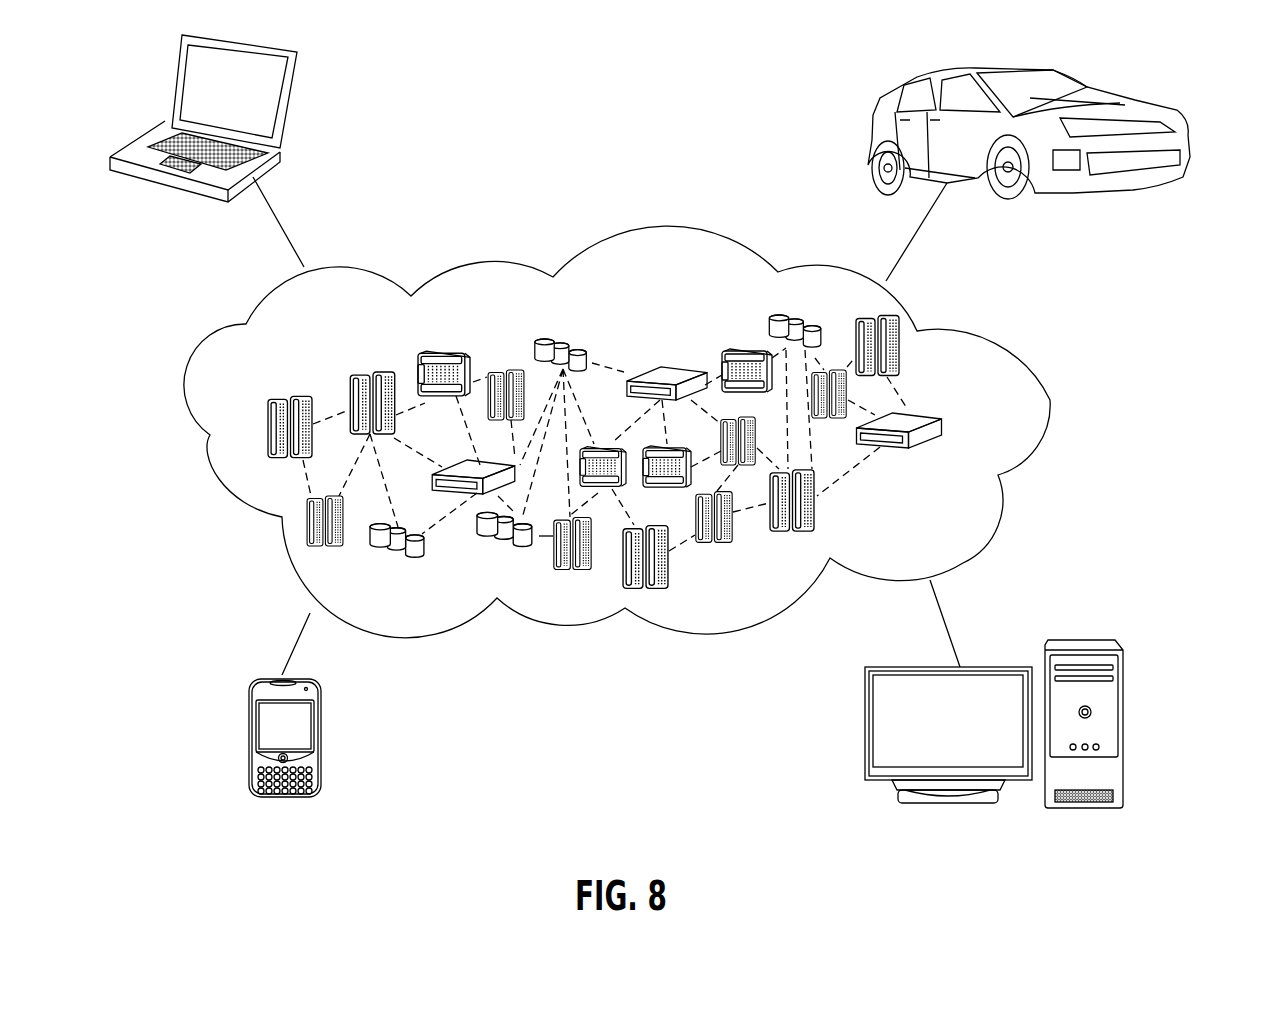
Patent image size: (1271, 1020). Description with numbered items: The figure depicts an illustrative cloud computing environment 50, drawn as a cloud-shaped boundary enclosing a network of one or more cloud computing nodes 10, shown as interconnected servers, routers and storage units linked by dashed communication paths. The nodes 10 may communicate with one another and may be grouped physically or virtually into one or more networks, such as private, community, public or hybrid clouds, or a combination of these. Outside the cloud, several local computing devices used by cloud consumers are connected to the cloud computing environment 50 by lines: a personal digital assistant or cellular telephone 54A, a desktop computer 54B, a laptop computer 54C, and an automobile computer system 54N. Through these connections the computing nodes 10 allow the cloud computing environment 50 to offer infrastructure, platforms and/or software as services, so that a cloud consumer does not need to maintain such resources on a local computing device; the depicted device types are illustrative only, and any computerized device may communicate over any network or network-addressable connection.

The cloud computing nodes 10 is at (982, 426).
The cloud computing environment 50 is at (1010, 340).
The personal digital assistant (PDA) or cellular telephone 54A is at (249, 742).
The desktop computer 54B is at (1088, 640).
The laptop computer 54C is at (292, 105).
The automobile computer system 54N is at (877, 113).